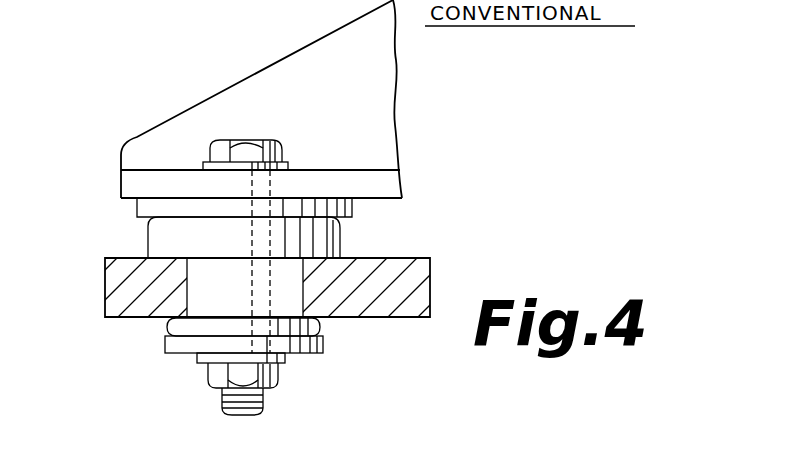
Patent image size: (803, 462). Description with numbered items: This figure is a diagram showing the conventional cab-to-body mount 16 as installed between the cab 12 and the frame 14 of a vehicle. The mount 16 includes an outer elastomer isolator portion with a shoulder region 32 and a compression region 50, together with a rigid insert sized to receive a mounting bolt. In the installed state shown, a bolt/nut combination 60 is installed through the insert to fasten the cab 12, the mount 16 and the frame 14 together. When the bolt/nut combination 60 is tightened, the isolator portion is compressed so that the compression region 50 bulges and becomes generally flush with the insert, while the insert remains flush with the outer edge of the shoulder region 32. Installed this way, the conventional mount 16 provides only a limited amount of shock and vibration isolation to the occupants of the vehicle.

The cab 12 is at (392, 85).
The frame 14 is at (378, 320).
The conventional cab-to-body mount 16 is at (368, 231).
The shoulder region 32 is at (157, 232).
The compression region 50 is at (168, 323).
The bolt/nut combination 60 is at (203, 378).